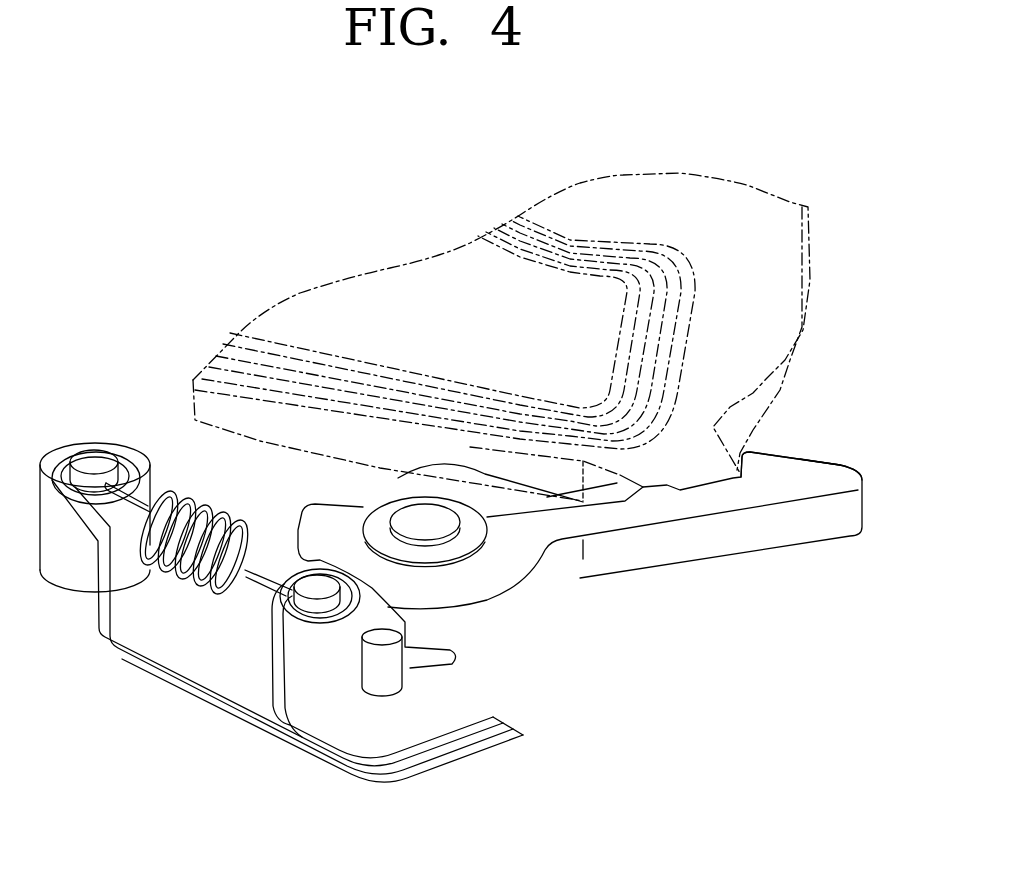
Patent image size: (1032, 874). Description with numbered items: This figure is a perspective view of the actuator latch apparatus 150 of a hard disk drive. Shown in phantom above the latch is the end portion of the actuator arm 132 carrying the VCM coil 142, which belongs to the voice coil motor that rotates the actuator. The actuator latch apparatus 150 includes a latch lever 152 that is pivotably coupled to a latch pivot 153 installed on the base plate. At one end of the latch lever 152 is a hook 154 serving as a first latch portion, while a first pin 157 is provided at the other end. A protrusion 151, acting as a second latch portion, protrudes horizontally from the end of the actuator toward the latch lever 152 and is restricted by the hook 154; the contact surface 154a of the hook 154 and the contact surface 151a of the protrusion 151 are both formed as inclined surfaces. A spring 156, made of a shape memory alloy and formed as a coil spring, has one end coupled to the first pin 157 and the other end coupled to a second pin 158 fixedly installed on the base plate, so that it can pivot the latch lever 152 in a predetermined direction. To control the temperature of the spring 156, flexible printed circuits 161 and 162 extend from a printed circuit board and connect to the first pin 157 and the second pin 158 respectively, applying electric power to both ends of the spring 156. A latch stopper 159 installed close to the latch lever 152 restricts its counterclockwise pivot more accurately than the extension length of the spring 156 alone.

The actuator arm 132 is at (280, 423).
The VCM coil 142 is at (383, 395).
The actuator latch apparatus 150 is at (537, 647).
The protrusion 151 is at (682, 460).
The contact surface of the protrusion 151a is at (398, 478).
The latch lever 152 is at (620, 512).
The latch pivot 153 is at (433, 530).
The hook 154 is at (760, 460).
The contact surface of the hook 154a is at (803, 455).
The spring 156 is at (176, 566).
The first pin 157 is at (282, 604).
The second pin 158 is at (95, 458).
The latch stopper 159 is at (397, 672).
The flexible printed circuit 161 is at (360, 752).
The flexible printed circuit 162 is at (307, 747).